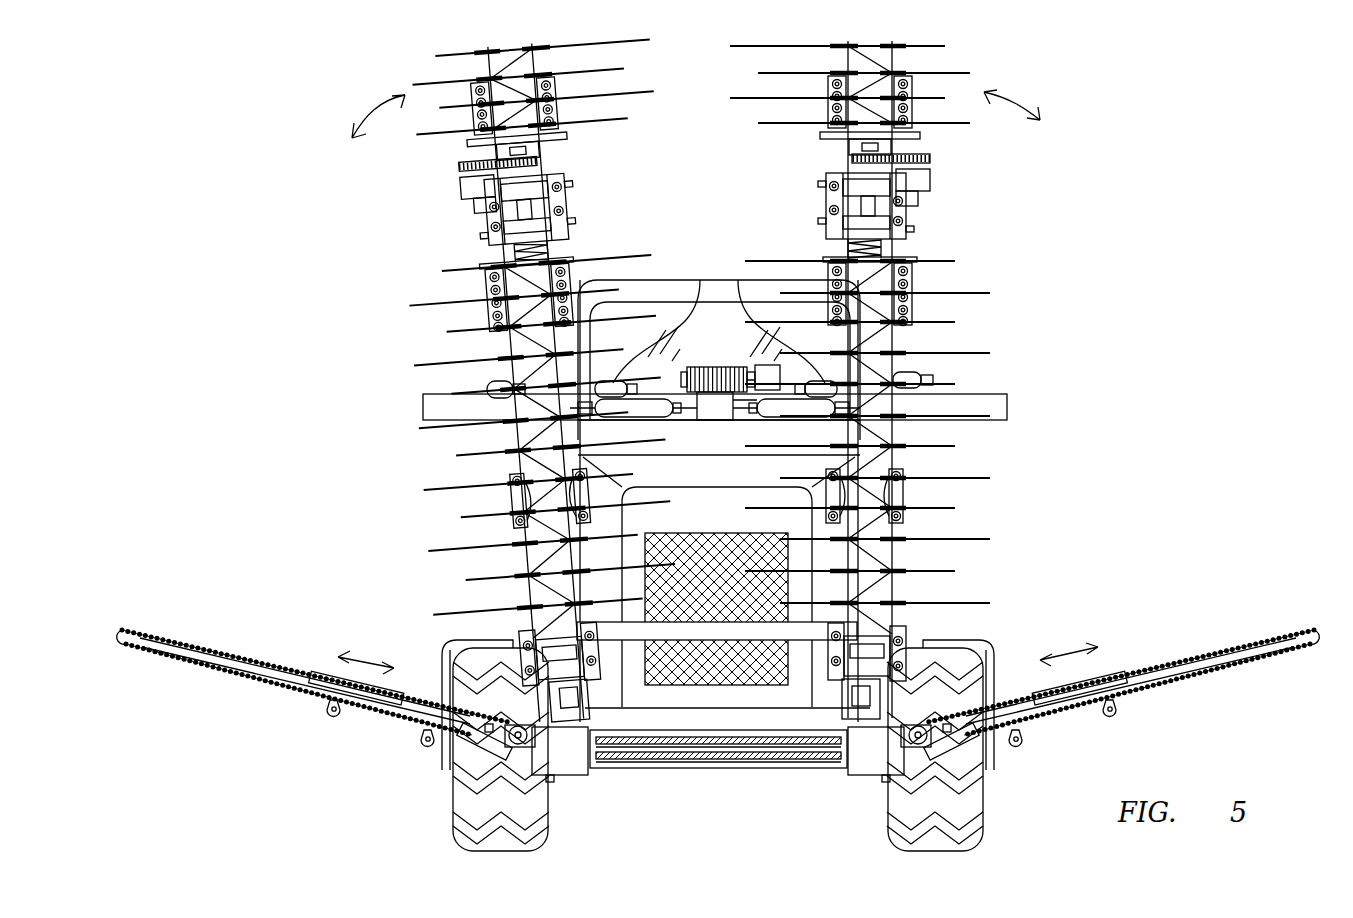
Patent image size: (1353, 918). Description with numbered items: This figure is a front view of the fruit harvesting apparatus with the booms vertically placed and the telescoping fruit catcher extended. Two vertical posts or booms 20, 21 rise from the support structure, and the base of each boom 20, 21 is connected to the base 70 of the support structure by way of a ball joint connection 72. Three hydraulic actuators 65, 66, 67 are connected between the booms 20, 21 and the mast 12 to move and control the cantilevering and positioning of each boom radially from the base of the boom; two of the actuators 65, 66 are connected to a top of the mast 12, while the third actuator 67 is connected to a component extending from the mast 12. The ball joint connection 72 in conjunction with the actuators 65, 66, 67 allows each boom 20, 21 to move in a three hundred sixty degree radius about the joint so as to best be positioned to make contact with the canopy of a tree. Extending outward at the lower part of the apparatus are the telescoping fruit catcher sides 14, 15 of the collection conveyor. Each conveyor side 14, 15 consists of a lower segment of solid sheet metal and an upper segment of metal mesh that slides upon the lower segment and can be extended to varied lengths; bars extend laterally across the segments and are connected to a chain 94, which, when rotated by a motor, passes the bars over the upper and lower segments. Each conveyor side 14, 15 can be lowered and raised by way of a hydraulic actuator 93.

The mast 12 is at (1008, 392).
The telescoping side fruit catcher conveyor 14 is at (243, 673).
The telescoping side fruit catcher conveyor 15 is at (1217, 660).
The boom 20 is at (513, 347).
The boom 21 is at (897, 331).
The hydraulic actuator 65 is at (500, 383).
The hydraulic actuator 66 is at (613, 383).
The hydraulic actuator 67 is at (643, 410).
The base 70 is at (862, 778).
The ball joint connection 72 is at (567, 723).
The hydraulic actuator 93 is at (443, 735).
The chain 94 is at (122, 628).